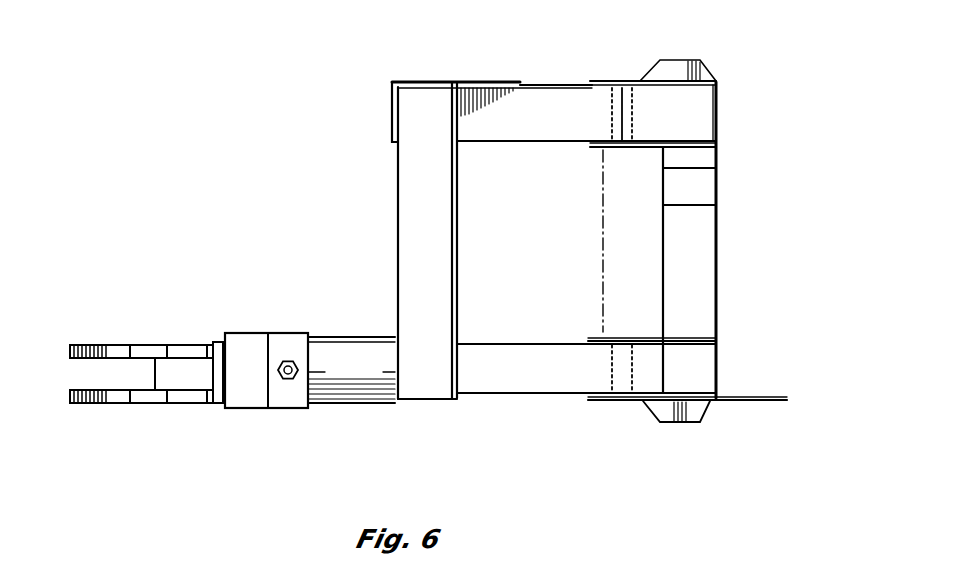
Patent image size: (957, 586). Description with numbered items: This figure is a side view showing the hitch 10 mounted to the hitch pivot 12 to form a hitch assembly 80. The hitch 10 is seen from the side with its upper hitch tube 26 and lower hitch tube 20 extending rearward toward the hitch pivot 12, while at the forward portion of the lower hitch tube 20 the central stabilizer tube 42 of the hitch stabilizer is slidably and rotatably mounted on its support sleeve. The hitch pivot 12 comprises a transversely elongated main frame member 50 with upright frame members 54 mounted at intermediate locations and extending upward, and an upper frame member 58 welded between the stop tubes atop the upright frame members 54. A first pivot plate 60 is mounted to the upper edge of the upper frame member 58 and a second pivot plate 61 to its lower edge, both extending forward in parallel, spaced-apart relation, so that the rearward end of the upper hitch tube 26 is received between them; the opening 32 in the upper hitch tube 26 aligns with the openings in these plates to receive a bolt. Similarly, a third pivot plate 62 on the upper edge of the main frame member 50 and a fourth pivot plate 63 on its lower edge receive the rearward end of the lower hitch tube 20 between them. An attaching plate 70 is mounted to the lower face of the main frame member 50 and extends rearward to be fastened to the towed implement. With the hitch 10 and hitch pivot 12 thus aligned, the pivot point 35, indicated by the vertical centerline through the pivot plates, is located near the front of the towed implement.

The hitch 10 is at (263, 432).
The hitch pivot 12 is at (774, 184).
The lower hitch tube 20 is at (517, 382).
The upper hitch tube 26 is at (478, 143).
The opening 32 is at (637, 105).
The pivot point 35 is at (603, 261).
The central stabilizer tube 42 is at (240, 333).
The main frame member 50 is at (716, 367).
The upright frame members 54 is at (716, 291).
The upper frame member 58 is at (716, 113).
The first pivot plate 60 is at (638, 83).
The second pivot plate 61 is at (592, 148).
The third pivot plate 62 is at (643, 336).
The fourth pivot plate 63 is at (643, 402).
The attaching plate 70 is at (767, 401).
The hitch assembly 80 is at (302, 198).